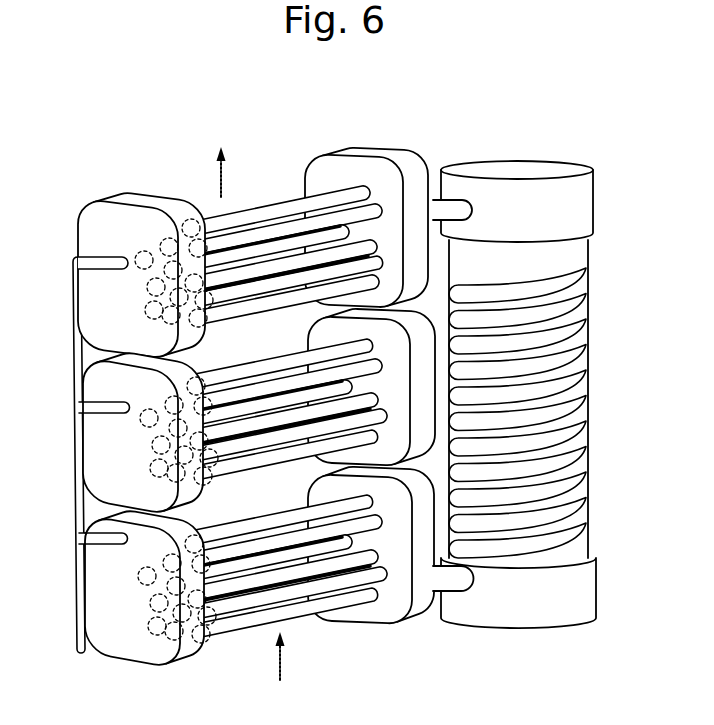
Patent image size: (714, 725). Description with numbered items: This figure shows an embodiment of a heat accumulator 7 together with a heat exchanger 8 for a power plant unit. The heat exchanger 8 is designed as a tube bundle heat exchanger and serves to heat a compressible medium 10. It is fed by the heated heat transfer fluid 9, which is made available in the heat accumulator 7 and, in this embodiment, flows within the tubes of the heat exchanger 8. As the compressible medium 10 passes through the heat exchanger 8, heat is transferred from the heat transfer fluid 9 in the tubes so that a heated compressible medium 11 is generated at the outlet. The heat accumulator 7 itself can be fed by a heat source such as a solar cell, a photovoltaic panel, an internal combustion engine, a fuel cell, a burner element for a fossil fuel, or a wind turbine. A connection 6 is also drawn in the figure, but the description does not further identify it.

The lower connection port 6 is at (445, 583).
The heat accumulator 7 is at (539, 161).
The heat exchanger 8 is at (108, 218).
The heated heat transfer fluid 9 is at (436, 203).
The compressible medium 10 is at (282, 663).
The heated compressible medium 11 is at (223, 167).